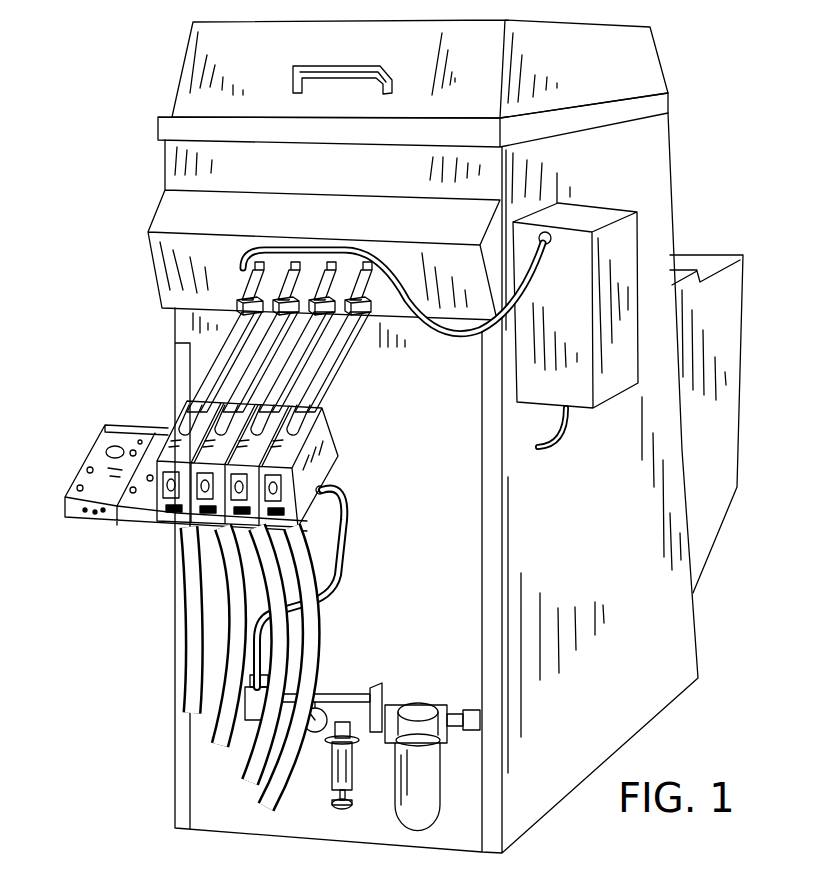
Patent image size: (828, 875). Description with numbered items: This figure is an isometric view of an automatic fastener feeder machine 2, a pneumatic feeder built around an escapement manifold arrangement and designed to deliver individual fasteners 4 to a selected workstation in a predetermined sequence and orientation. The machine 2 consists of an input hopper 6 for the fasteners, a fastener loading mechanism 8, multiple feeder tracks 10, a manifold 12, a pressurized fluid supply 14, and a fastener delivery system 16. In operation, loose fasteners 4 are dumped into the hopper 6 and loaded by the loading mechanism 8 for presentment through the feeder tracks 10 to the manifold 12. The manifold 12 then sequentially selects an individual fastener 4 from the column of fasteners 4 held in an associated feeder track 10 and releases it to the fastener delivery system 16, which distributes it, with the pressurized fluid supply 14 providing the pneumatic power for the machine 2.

The automatic fastener feeder machine 2 is at (150, 78).
The fasteners 4 is at (128, 789).
The input hopper 6 is at (725, 255).
The fastener loading mechanism 8 is at (162, 210).
The feeder tracks 10 is at (253, 345).
The manifold 12 is at (97, 460).
The pressurized fluid supply 14 is at (340, 512).
The fastener delivery system 16 is at (192, 686).